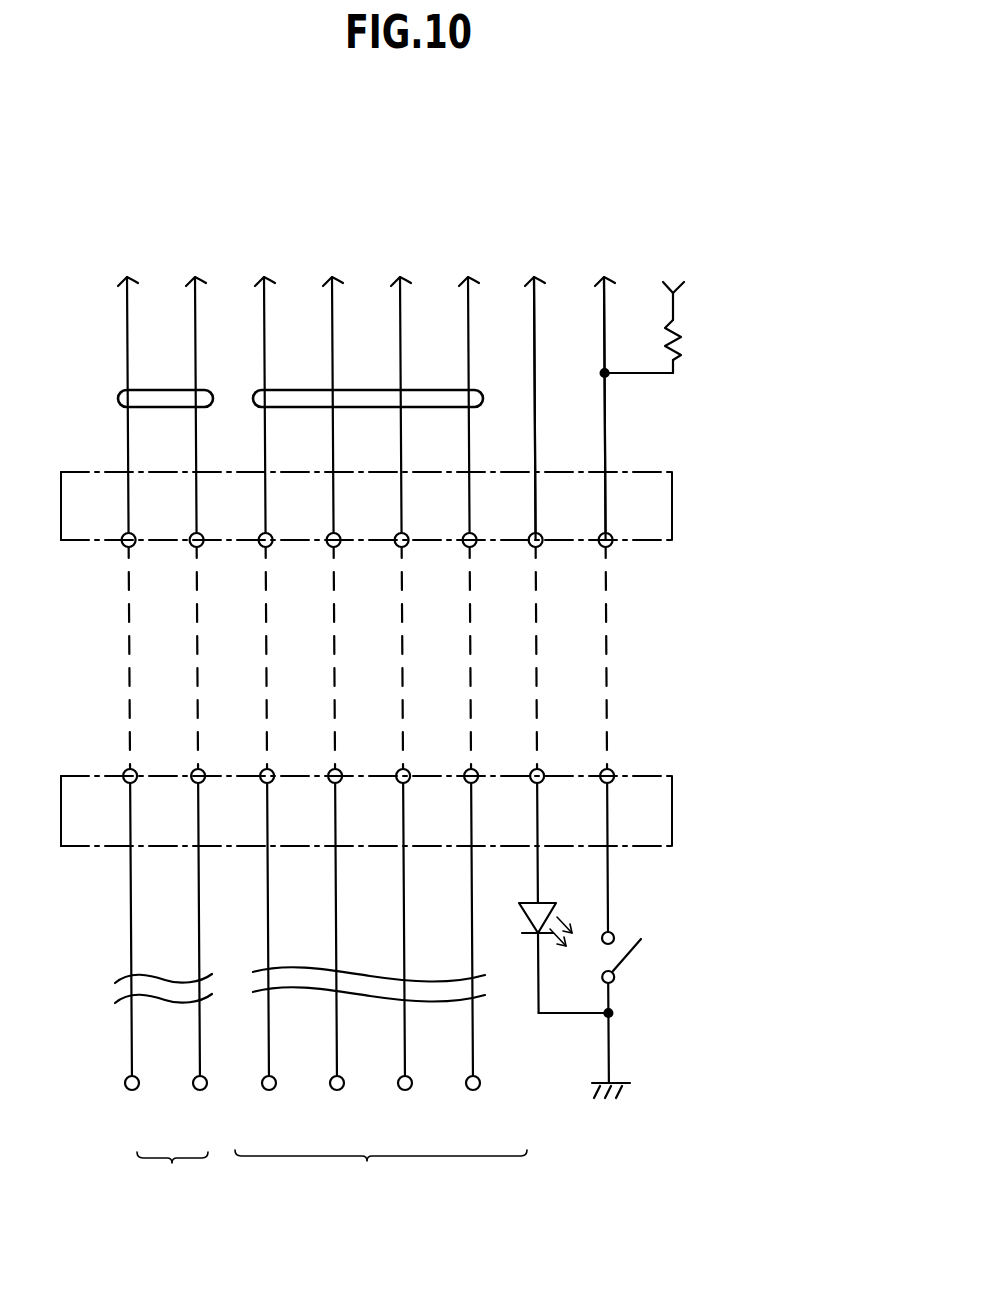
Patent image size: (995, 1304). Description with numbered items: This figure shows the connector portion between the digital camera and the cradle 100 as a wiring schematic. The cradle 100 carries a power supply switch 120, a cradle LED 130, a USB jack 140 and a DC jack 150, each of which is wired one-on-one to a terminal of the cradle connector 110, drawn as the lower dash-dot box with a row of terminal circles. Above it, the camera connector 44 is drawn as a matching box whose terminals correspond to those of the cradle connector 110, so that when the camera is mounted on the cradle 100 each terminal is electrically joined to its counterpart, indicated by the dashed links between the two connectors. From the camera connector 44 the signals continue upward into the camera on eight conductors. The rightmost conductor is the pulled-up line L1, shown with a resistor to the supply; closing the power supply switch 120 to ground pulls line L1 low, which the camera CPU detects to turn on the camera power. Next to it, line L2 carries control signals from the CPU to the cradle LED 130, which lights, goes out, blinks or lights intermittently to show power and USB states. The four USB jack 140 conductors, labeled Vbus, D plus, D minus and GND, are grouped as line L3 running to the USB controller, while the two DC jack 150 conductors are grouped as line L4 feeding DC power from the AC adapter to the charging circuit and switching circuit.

The cradle 100 is at (757, 960).
The camera connector 44 is at (672, 505).
The cradle connector 110 is at (672, 812).
The power supply switch 120 is at (623, 965).
The cradle LED 130 is at (527, 917).
The USB jack 140 is at (381, 1149).
The DC jack 150 is at (177, 1154).
The line L1 is at (607, 446).
The line L2 is at (536, 463).
The line L3 is at (380, 390).
The line L4 is at (153, 390).